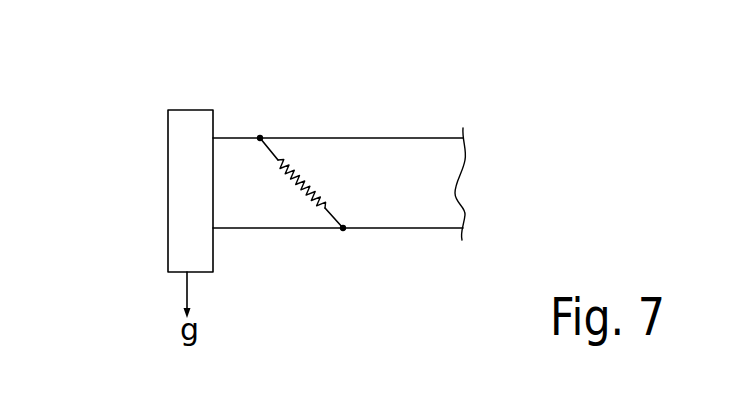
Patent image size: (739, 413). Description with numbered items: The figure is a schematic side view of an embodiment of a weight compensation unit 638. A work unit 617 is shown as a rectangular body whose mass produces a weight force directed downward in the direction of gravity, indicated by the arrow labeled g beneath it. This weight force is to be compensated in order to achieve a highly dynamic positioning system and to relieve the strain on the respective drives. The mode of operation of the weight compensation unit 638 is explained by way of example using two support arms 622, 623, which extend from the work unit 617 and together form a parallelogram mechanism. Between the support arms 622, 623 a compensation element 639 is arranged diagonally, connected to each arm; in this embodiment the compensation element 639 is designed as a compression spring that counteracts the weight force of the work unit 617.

The work unit 617 is at (190, 178).
The support arm 622 is at (408, 137).
The support arm 623 is at (410, 232).
The weight compensation unit 638 is at (478, 86).
The compensation element 639 is at (279, 150).